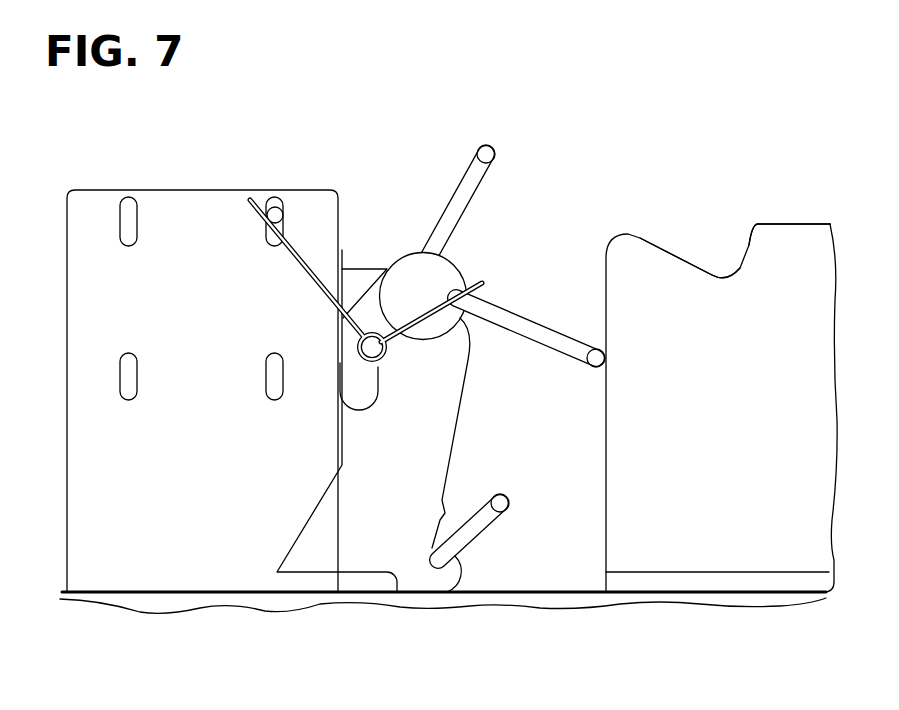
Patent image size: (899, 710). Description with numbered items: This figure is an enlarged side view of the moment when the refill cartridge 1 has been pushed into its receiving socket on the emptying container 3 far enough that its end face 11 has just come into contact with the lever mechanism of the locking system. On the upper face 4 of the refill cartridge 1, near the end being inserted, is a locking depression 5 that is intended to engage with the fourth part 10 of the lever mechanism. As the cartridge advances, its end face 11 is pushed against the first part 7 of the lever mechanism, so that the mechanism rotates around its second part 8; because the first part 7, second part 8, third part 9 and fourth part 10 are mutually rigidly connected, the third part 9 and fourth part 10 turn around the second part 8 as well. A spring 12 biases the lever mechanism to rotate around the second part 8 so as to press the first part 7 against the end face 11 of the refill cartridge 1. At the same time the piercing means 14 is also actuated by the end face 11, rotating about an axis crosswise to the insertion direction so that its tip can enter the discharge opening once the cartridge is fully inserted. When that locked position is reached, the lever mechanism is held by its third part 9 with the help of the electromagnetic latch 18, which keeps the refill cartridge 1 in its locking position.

The refill cartridge 1 is at (646, 467).
The emptying container 3 is at (148, 602).
The upper face 4 is at (792, 223).
The locking depression 5 is at (735, 268).
The first part 7 is at (595, 368).
The second part 8 is at (443, 285).
The third part 9 is at (380, 362).
The fourth part 10 is at (480, 147).
The end face 11 is at (601, 256).
The spring 12 is at (345, 355).
The piercing means 14 is at (477, 528).
The electromagnetic latch 18 is at (365, 273).